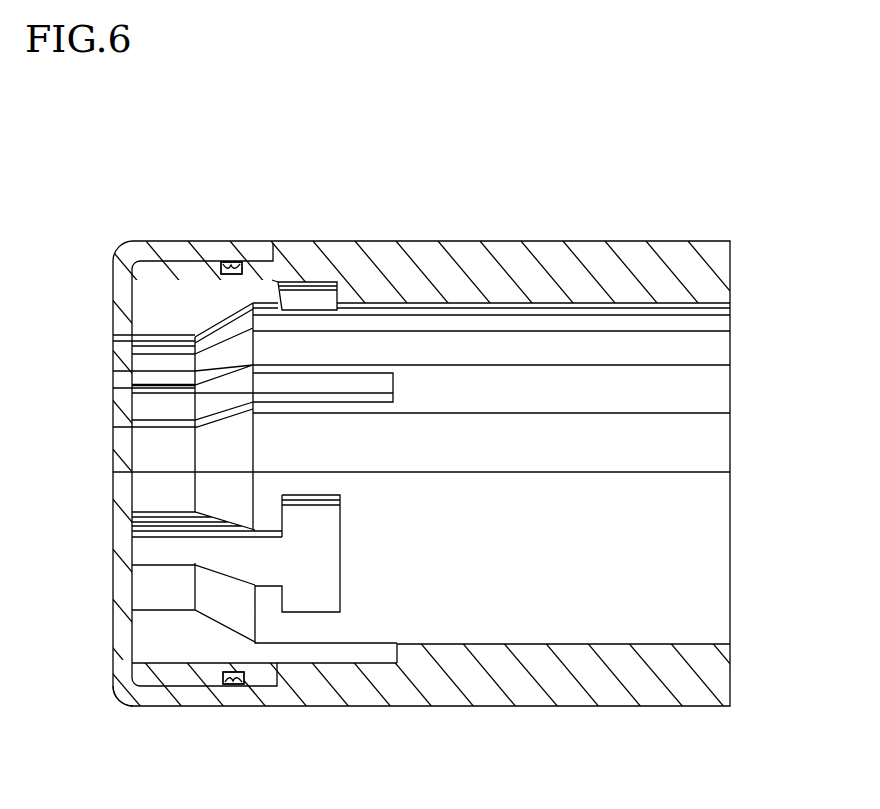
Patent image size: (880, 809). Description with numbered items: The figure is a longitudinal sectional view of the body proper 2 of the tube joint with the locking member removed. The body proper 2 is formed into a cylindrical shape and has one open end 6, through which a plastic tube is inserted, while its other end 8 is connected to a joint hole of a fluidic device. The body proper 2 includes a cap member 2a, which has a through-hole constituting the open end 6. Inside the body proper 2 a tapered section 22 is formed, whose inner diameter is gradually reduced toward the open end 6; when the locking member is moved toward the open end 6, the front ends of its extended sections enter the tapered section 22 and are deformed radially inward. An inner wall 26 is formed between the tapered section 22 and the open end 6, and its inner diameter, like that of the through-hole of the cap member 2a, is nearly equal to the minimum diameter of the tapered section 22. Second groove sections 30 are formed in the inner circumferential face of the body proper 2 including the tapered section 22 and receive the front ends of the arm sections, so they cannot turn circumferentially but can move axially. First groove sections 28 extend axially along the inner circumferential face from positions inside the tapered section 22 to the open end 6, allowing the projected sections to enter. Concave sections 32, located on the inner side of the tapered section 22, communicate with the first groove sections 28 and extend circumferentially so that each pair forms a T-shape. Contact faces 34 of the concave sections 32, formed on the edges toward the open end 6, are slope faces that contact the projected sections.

The body proper 2 is at (461, 166).
The cap member 2a is at (124, 690).
The open end 6 is at (113, 461).
The other end 8 is at (733, 385).
The tapered section 22 is at (222, 311).
The inner wall 26 is at (158, 335).
The first groove sections 28 is at (197, 337).
The second groove sections 30 is at (113, 373).
The concave sections 32 is at (312, 282).
The contact faces 34 is at (271, 280).